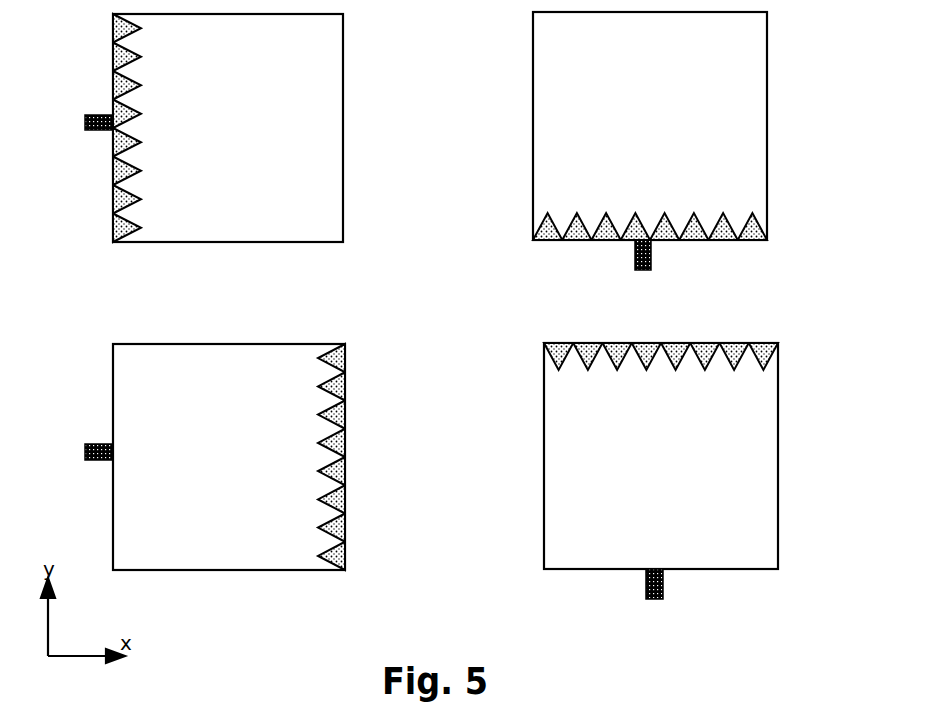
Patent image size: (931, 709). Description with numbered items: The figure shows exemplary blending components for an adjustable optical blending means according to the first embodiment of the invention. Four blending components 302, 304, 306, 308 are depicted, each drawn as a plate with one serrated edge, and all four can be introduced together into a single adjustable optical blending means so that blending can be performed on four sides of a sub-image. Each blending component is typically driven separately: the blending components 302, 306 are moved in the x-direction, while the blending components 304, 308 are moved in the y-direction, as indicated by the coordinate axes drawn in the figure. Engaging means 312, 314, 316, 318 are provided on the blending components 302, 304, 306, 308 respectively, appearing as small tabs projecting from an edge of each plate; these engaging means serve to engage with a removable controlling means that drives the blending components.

The blending component 302 is at (335, 51).
The blending component 304 is at (757, 49).
The blending component 306 is at (340, 377).
The blending component 308 is at (768, 380).
The engaging means 312 is at (108, 129).
The engaging means 314 is at (635, 262).
The engaging means 316 is at (103, 459).
The engaging means 318 is at (646, 590).